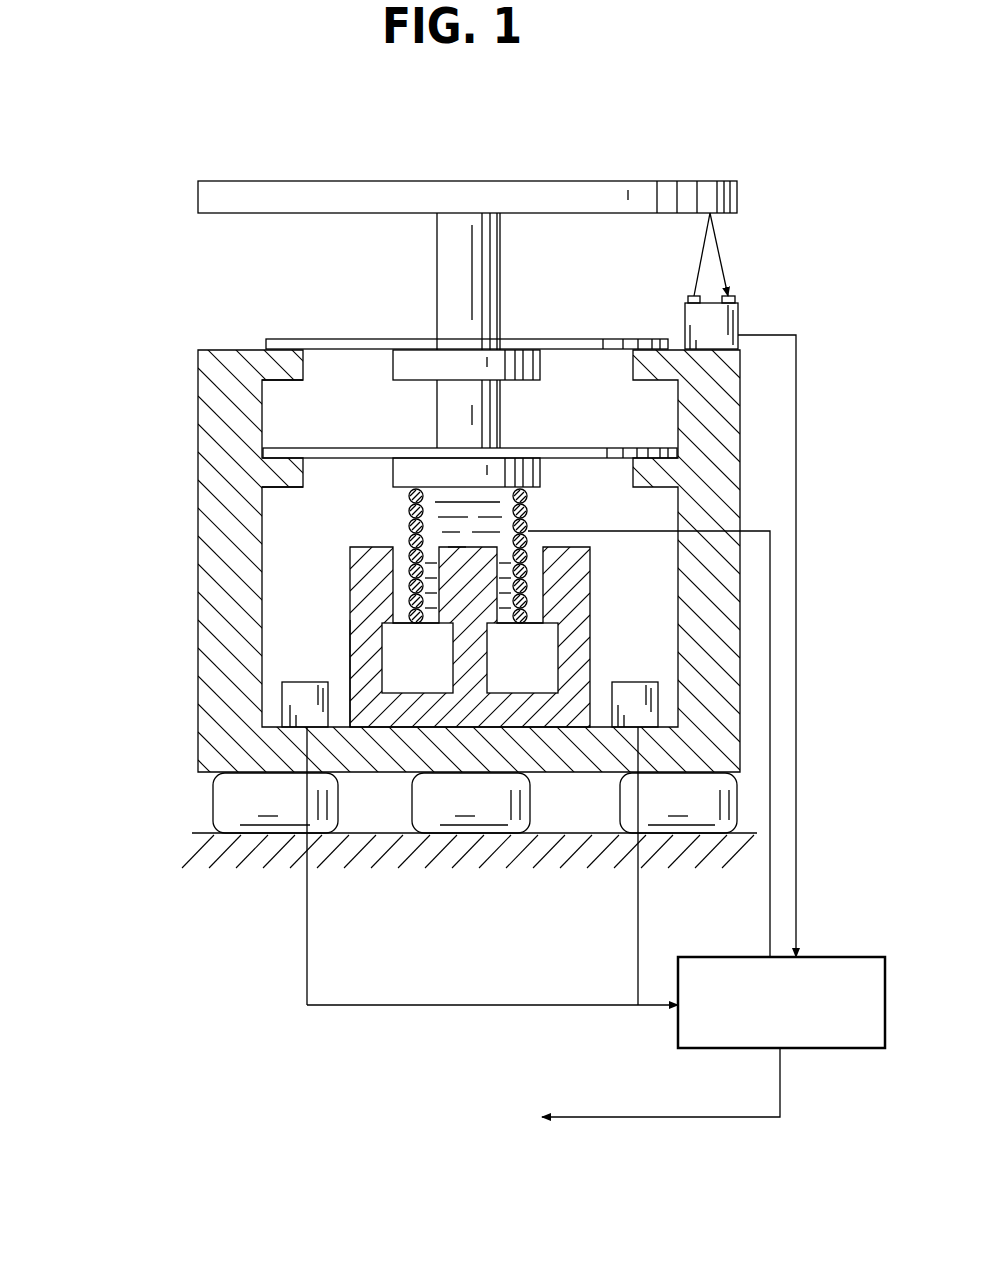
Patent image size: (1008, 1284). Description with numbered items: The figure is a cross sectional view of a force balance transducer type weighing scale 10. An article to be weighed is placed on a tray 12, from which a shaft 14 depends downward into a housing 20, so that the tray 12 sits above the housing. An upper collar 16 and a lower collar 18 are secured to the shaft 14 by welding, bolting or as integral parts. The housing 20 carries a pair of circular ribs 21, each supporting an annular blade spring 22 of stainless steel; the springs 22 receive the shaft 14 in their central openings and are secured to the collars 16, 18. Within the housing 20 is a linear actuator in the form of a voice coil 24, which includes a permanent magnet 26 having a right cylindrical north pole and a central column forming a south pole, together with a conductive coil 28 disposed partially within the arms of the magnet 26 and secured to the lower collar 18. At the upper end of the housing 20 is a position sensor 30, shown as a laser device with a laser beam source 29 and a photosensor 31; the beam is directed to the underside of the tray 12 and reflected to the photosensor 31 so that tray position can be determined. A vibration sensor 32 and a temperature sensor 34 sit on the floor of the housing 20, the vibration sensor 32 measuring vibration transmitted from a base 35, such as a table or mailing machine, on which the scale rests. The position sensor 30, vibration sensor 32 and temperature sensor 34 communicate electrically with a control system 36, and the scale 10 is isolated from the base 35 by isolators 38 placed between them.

The weighing scale 10 is at (773, 210).
The tray 12 is at (302, 181).
The shaft 14 is at (500, 300).
The upper collar 16 is at (545, 367).
The lower collar 18 is at (545, 474).
The housing 20 is at (198, 412).
The circular ribs 21 is at (290, 380).
The annular blade spring 22 is at (360, 339).
The voice coil 24 is at (338, 607).
The permanent magnet 26 is at (348, 650).
The conductive coil 28 is at (408, 514).
The laser beam source 29 is at (690, 298).
The position sensor 30 is at (742, 322).
The photosensor 31 is at (738, 298).
The vibration sensor 32 is at (318, 682).
The temperature sensor 34 is at (638, 682).
The base 35 is at (208, 833).
The control system 36 is at (718, 957).
The isolators 38 is at (412, 808).